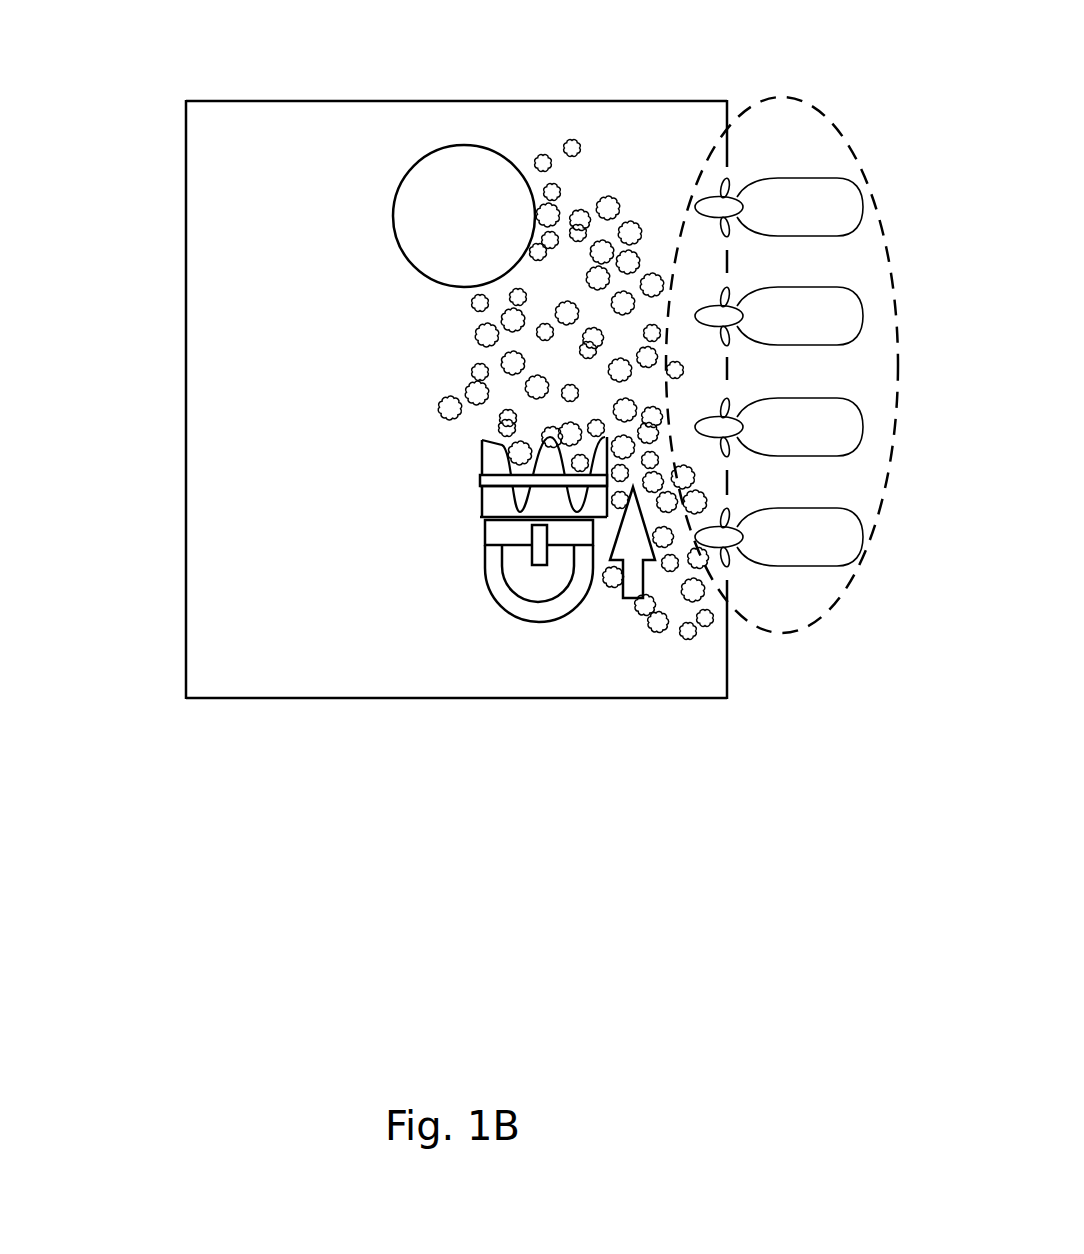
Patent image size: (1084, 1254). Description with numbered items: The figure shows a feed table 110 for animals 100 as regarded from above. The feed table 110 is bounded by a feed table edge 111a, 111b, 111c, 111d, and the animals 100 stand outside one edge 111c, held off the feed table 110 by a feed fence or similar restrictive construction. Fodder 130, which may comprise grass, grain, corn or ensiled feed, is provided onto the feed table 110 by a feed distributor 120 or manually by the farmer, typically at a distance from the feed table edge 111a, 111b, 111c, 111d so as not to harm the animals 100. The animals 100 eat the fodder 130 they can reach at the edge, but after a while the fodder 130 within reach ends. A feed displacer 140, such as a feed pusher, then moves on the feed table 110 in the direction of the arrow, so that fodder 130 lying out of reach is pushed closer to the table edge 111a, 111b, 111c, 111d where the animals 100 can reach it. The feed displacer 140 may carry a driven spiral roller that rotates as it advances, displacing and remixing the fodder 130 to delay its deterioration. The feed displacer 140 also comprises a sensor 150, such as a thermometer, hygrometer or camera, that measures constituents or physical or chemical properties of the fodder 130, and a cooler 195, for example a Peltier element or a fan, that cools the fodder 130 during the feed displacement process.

The animals 100 is at (822, 110).
The feed table 110 is at (238, 243).
The feed table edge 111a is at (185, 645).
The feed table edge 111b is at (277, 700).
The feed table edge 111c is at (727, 665).
The feed table edge 111d is at (267, 100).
The feed distributor 120 is at (448, 185).
The fodder 130 is at (539, 157).
The feed displacer 140 is at (528, 590).
The sensor 150 is at (540, 538).
The cooler 195 is at (538, 480).